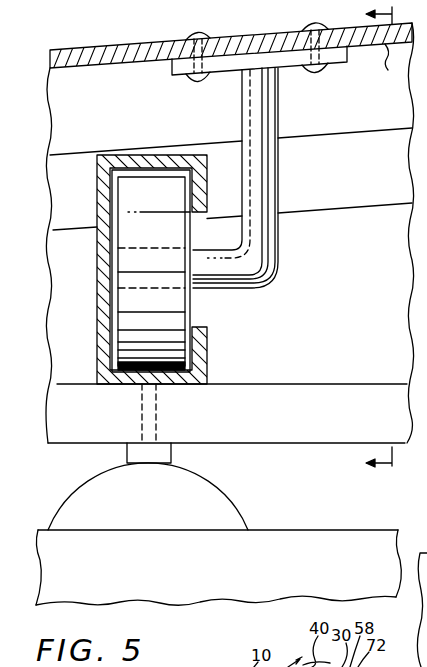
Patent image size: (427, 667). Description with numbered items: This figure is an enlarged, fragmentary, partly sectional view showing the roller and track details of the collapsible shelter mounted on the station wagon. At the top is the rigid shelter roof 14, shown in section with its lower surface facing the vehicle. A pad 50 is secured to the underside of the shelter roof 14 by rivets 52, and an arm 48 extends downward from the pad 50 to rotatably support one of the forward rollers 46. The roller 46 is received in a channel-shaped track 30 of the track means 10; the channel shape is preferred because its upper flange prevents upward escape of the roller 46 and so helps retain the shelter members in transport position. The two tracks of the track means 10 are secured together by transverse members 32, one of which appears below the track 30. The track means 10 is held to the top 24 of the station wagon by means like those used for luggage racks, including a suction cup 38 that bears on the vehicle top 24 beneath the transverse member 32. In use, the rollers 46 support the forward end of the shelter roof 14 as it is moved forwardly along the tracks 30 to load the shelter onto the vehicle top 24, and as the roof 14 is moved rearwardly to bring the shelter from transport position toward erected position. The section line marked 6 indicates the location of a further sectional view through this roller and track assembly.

The section line 6- 6 is at (386, 238).
The track means 10 is at (253, 343).
The shelter roof 14 is at (153, 50).
The top of station wagon 24 is at (228, 573).
The track 30 is at (138, 156).
The transverse member 32 is at (278, 416).
The suction cup 38 is at (160, 519).
The forward roller 46 is at (164, 241).
The arm 48 is at (258, 137).
The pad 50 is at (338, 58).
The rivet 52 is at (200, 33).